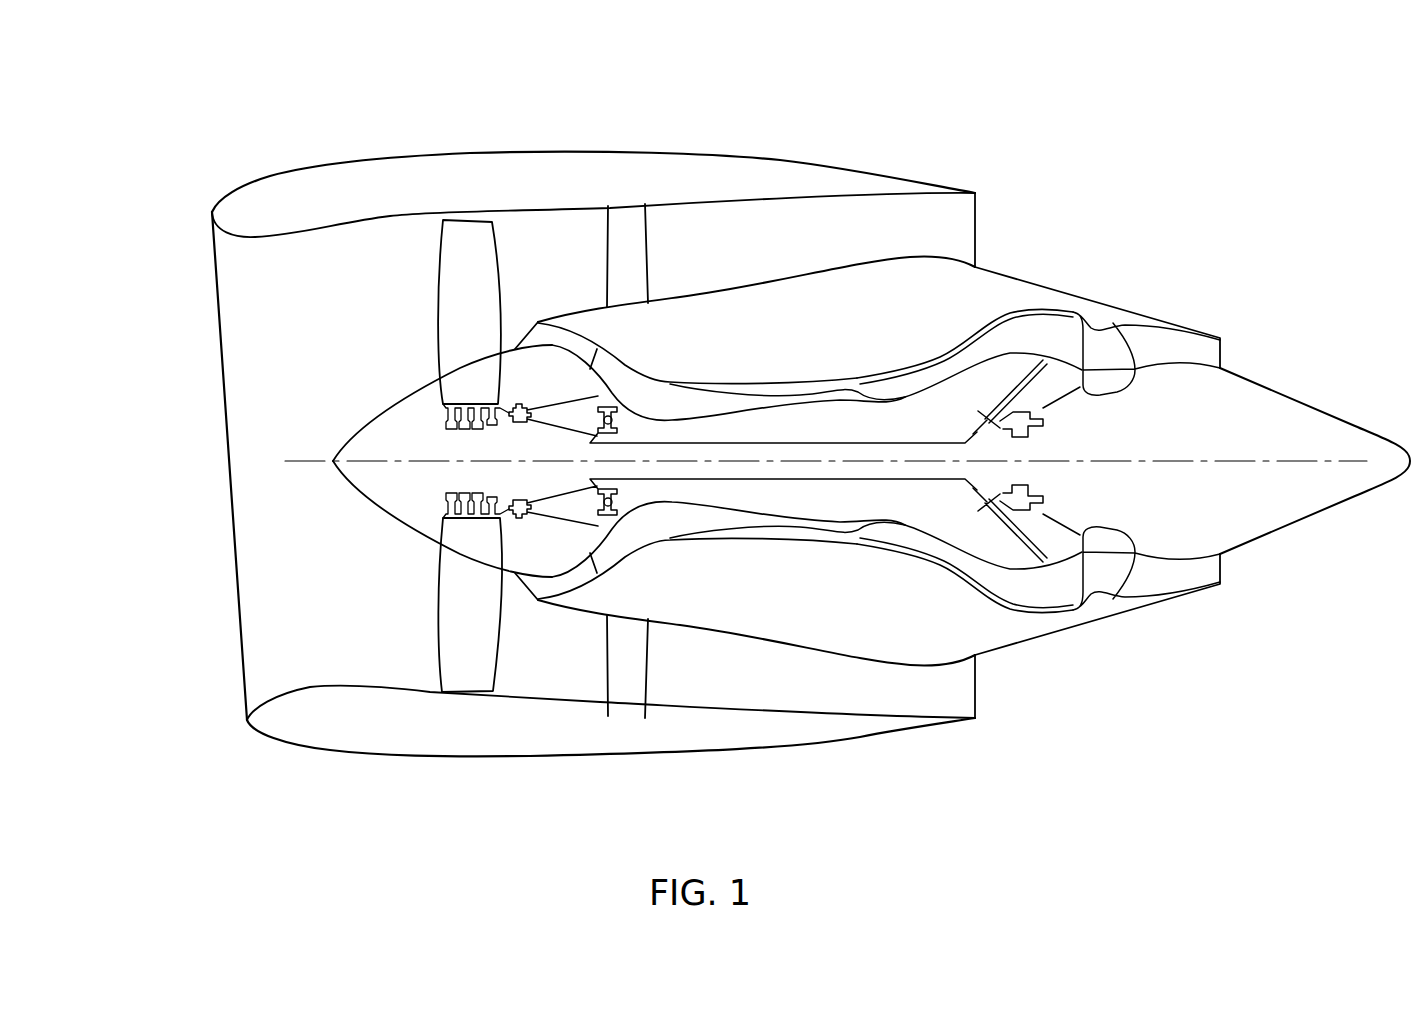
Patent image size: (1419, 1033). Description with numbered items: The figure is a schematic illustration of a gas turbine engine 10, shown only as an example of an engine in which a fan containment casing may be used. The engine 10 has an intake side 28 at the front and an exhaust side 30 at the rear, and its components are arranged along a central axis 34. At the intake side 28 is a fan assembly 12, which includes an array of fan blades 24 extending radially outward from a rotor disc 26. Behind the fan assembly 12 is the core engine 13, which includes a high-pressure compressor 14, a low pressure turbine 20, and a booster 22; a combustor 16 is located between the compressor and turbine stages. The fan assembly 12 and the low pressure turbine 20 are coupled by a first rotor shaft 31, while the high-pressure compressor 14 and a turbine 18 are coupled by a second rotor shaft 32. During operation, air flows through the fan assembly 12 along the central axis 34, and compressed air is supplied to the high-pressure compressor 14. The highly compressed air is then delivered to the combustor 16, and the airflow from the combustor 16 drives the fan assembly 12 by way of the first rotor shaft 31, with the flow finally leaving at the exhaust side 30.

The gas turbine engine 10 is at (1242, 130).
The fan assembly 12 is at (445, 627).
The core engine 13 is at (800, 287).
The high-pressure compressor 14 is at (673, 407).
The combustor 16 is at (865, 392).
The turbine 18 is at (918, 541).
The low pressure turbine 20 is at (1000, 328).
The booster 22 is at (563, 337).
The fan blades 24 is at (443, 272).
The rotor disc 26 is at (373, 490).
The intake side 28 is at (204, 367).
The exhaust side 30 is at (988, 236).
The first rotor shaft 31 is at (723, 443).
The second rotor shaft 32 is at (723, 517).
The central axis 34 is at (1213, 458).